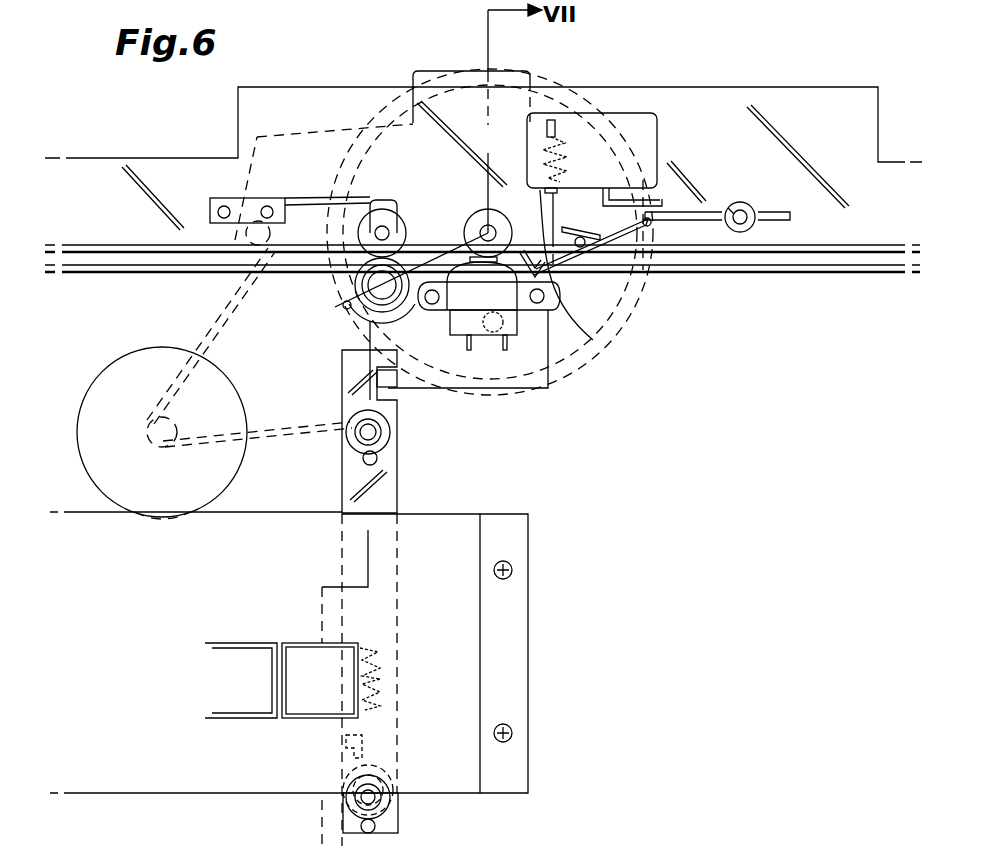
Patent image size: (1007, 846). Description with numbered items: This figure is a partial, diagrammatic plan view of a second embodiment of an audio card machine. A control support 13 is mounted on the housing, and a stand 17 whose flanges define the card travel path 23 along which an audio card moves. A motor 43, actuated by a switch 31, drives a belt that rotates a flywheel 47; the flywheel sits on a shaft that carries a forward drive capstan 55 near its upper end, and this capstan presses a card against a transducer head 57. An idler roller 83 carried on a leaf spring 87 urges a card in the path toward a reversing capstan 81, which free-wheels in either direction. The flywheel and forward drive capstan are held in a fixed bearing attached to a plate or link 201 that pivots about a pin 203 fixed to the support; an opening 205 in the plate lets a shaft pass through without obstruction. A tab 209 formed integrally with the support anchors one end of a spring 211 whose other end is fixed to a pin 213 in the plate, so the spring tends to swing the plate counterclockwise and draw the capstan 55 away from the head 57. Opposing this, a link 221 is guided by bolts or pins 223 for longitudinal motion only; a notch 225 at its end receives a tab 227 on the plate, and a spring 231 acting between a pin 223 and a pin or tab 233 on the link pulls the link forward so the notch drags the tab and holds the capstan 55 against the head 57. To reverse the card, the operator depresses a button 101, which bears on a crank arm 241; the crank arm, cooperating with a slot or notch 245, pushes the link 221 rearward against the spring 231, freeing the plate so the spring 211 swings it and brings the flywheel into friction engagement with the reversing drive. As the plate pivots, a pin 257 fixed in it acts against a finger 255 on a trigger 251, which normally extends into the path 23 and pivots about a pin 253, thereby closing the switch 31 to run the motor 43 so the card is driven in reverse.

The control support 13 is at (451, 576).
The stand 17 is at (737, 79).
The card travel path 23 is at (803, 263).
The switch 31 is at (660, 128).
The motor 43 is at (152, 353).
The flywheel 47 is at (588, 376).
The forward drive capstan 55 is at (478, 217).
The transducer head 57 is at (460, 327).
The reversing capstan 81 is at (353, 296).
The idler roller 83 is at (408, 213).
The leaf spring 87 is at (358, 203).
The button 101 is at (316, 692).
The plate or link 201 is at (340, 352).
The pin 203 is at (246, 233).
The opening 205 is at (343, 308).
The tab 209 is at (607, 71).
The spring 211 is at (668, 155).
The pin 213 is at (594, 343).
The link 221 is at (388, 490).
The bolts or pins 223 is at (340, 440).
The notch 225 is at (340, 396).
The tab 227 is at (397, 382).
The spring 231 is at (380, 690).
The pin or tab 233 is at (380, 663).
The crank arm 241 is at (346, 747).
The slot or notch 245 is at (343, 768).
The trigger 251 is at (647, 224).
The pin 253 is at (745, 207).
The finger 255 is at (645, 230).
The pin 257 is at (583, 262).